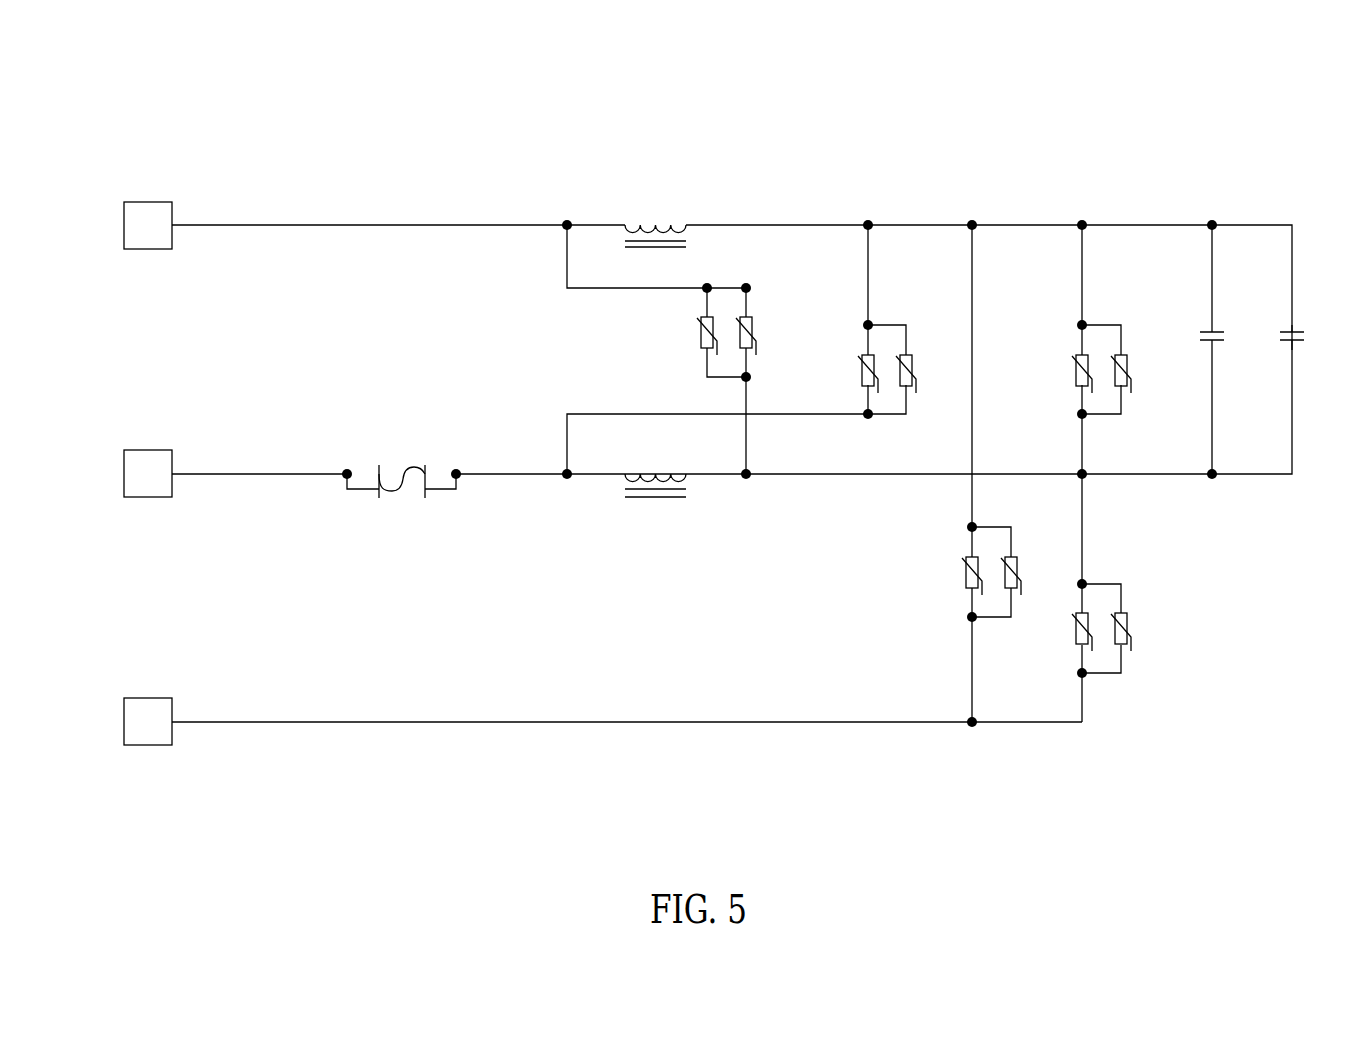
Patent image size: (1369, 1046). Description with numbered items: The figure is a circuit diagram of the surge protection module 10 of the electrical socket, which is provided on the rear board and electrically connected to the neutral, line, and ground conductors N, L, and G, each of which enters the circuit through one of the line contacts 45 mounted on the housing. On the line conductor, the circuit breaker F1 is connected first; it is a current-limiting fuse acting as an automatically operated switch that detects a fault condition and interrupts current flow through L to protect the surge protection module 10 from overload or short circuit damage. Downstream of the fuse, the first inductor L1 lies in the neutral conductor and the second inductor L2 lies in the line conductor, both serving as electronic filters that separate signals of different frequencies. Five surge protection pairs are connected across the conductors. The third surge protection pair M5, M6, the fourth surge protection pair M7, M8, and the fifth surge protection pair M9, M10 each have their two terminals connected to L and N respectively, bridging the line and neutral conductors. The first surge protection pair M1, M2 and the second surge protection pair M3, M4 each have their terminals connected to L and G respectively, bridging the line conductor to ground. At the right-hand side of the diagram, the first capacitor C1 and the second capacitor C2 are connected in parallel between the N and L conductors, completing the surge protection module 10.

The surge protection module 10 is at (232, 96).
The line contacts 45 is at (148, 473).
The first inductor L1 is at (655, 218).
The second inductor L2 is at (655, 468).
The circuit breaker F1 is at (401, 463).
The first surge protection pair M1 is at (949, 574).
The first surge protection pair M2 is at (1019, 572).
The second surge protection pair M3 is at (1060, 630).
The second surge protection pair M4 is at (1129, 628).
The third surge protection pair M5 is at (698, 332).
The third surge protection pair M6 is at (768, 321).
The fourth surge protection pair M7 is at (845, 371).
The fourth surge protection pair M8 is at (915, 369).
The fifth surge protection pair M9 is at (1060, 372).
The fifth surge protection pair M10 is at (1137, 369).
The first capacitor C1 is at (1232, 349).
The second capacitor C2 is at (1312, 338).